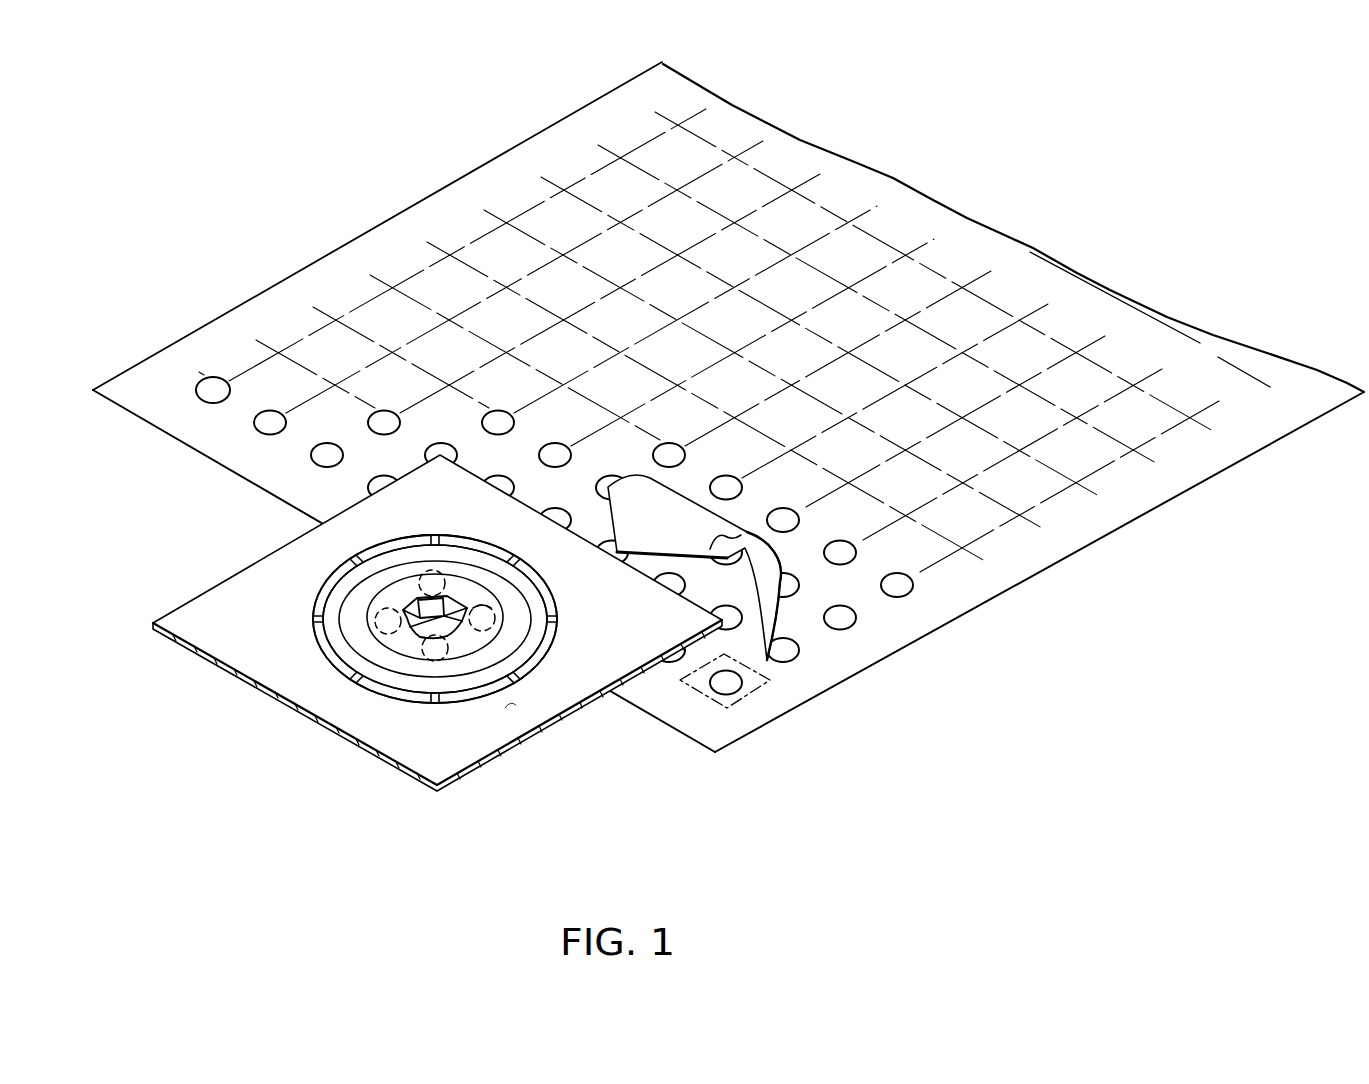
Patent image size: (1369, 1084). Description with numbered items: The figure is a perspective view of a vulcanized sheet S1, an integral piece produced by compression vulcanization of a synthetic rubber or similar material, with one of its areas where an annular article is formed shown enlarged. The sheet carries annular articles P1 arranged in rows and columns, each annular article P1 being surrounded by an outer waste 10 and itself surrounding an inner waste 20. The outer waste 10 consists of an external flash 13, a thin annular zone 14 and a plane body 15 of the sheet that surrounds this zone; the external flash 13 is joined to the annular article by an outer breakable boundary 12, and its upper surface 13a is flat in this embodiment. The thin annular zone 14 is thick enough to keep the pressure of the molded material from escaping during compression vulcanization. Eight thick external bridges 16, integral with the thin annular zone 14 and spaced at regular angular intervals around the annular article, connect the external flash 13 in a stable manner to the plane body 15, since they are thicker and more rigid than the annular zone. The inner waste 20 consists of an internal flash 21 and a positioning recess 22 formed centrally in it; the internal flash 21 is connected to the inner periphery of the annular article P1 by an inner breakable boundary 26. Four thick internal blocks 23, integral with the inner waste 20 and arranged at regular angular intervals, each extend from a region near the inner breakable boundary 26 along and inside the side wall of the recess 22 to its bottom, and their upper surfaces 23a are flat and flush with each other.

The vulcanized sheet S1 is at (269, 282).
The annular article P1 is at (205, 378).
The outer waste 10 is at (787, 697).
The outer breakable boundary 12 is at (318, 602).
The external flash 13 is at (423, 690).
The upper surface of the external flash 13a is at (398, 683).
The thin annular zone 14 is at (477, 700).
The plane body 15 is at (512, 708).
The external bridge 16 is at (513, 556).
The inner waste 20 is at (549, 694).
The internal flash 21 is at (465, 625).
The positioning recess 22 is at (505, 647).
The internal block 23 is at (428, 572).
The upper surface of the internal block 23a is at (492, 611).
The inner breakable boundary 26 is at (387, 658).